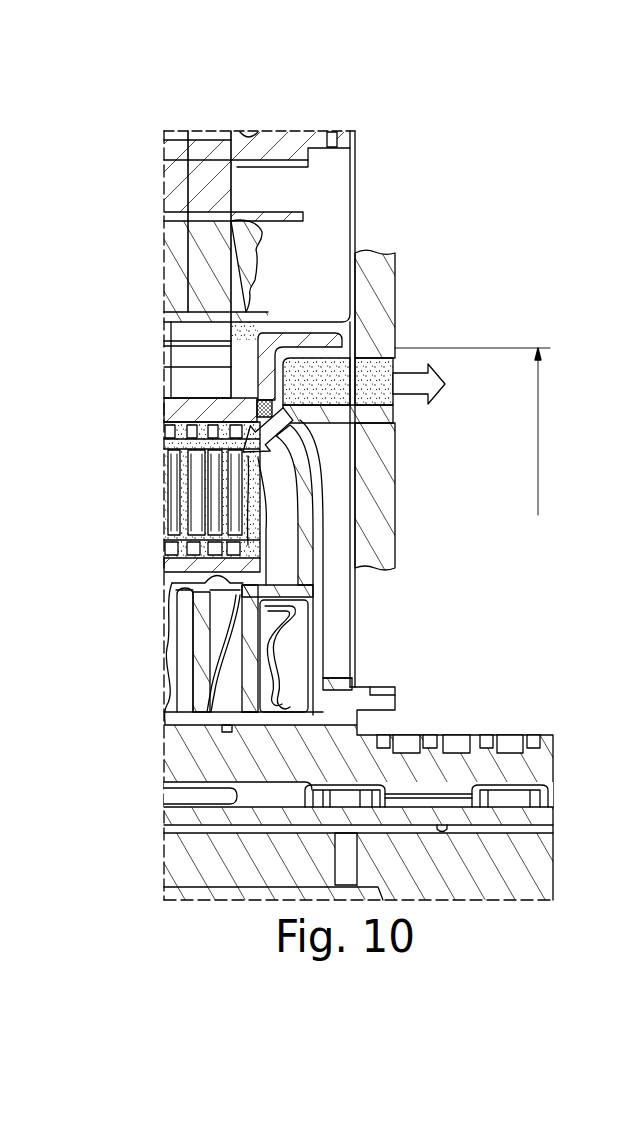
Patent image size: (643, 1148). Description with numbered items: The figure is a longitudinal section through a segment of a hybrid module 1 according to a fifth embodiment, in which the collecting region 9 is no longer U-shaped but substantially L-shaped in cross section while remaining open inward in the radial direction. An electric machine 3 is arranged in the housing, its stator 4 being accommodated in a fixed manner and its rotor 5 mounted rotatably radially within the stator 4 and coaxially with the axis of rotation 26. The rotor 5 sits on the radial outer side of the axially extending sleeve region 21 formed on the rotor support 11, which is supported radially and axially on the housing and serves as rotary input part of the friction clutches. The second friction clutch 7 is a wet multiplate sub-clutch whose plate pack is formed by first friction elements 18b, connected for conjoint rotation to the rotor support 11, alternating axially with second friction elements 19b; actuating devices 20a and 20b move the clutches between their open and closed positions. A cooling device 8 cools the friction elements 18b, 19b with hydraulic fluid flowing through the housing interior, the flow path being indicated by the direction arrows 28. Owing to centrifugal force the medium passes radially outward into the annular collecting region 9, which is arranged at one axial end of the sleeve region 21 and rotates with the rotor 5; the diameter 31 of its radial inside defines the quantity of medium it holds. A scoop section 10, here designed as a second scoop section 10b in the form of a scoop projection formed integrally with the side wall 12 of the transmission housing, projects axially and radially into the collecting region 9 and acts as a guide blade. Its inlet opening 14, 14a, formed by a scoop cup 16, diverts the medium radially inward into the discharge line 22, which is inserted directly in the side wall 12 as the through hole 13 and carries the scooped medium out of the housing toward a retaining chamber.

The hybrid module 1 is at (228, 120).
The electric machine 3 is at (152, 135).
The stator 4 is at (170, 257).
The rotor 5 is at (168, 360).
The second friction clutch 7 is at (159, 507).
The cooling device 8 is at (318, 292).
The collecting region 9 is at (317, 342).
The scoop section 10 is at (310, 383).
The second scoop section 10b is at (388, 484).
The rotor support 11 is at (170, 410).
The side wall 12 is at (377, 547).
The through hole 13 is at (402, 410).
The inlet opening 14 is at (328, 373).
The first inlet opening 14a is at (406, 351).
The scoop cup 16 is at (308, 417).
The first friction elements 18b is at (175, 483).
The second friction elements 19b is at (180, 518).
The actuating device 20a is at (296, 655).
The actuating device 20b is at (157, 687).
The sleeve region 21 is at (143, 393).
The discharge line 22 is at (373, 403).
The axis of rotation 26 is at (520, 900).
The direction arrows 28 is at (440, 387).
The diameter 31 is at (540, 430).